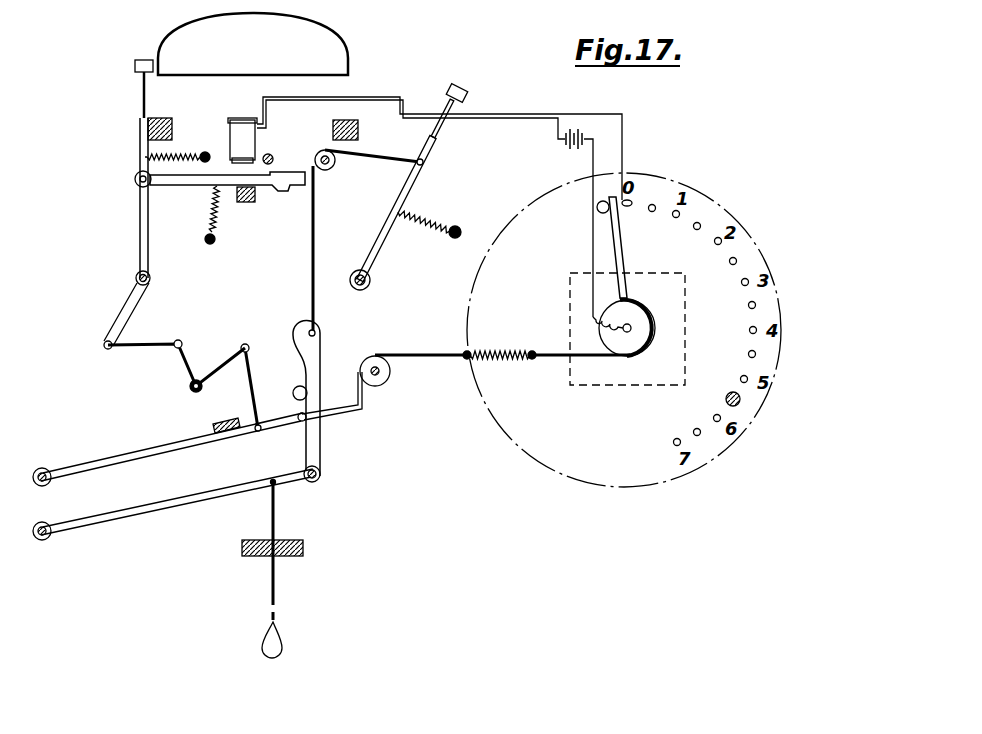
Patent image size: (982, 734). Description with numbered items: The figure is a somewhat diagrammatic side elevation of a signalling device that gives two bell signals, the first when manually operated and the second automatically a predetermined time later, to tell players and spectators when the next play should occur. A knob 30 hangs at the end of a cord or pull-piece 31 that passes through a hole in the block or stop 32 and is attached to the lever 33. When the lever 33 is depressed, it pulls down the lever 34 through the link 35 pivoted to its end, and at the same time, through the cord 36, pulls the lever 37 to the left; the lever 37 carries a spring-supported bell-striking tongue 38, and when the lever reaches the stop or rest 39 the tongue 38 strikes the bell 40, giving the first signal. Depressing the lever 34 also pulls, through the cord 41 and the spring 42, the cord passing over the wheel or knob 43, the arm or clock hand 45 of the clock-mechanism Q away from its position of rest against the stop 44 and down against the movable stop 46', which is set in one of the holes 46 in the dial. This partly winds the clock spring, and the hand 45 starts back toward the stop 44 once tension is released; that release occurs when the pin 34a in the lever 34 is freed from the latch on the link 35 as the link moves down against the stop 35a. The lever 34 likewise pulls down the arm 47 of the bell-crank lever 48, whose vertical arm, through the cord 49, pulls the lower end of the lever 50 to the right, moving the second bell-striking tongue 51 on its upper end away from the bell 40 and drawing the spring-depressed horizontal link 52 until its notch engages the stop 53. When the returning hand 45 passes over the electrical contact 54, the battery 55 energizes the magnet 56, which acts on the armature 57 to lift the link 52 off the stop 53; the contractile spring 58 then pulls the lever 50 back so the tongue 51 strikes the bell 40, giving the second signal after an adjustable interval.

The knob 30 is at (283, 648).
The cord or pull-piece 31 is at (279, 597).
The block or stop 32 is at (240, 550).
The lever 33 is at (128, 519).
The lever 34 is at (163, 453).
The pin 34a is at (299, 421).
The link 35 is at (318, 445).
The stop 35a is at (296, 390).
The cord 36 is at (316, 243).
The lever 37 is at (412, 191).
The bell-striking tongue 38 is at (476, 88).
The stop or rest 39 is at (333, 130).
The bell 40 is at (345, 52).
The cord 41 is at (405, 356).
The spring 42 is at (499, 340).
The wheel or knob 43 is at (390, 380).
The stop 44 is at (597, 209).
The arm or clock hand 45 is at (630, 255).
The holes 46 is at (703, 325).
The movable stop 46' is at (766, 408).
The arm 47 is at (245, 344).
The bell-crank lever 48 is at (190, 386).
The cord 49 is at (155, 344).
The lever 50 is at (140, 238).
The bell-striking tongue 51 is at (133, 67).
The horizontal link 52 is at (200, 183).
The stop 53 is at (246, 203).
The electrical contact 54 is at (632, 200).
The battery 55 is at (574, 150).
The magnet 56 is at (240, 125).
The armature 57 is at (290, 171).
The contractile spring 58 is at (178, 155).
The clock-mechanism Q is at (622, 388).